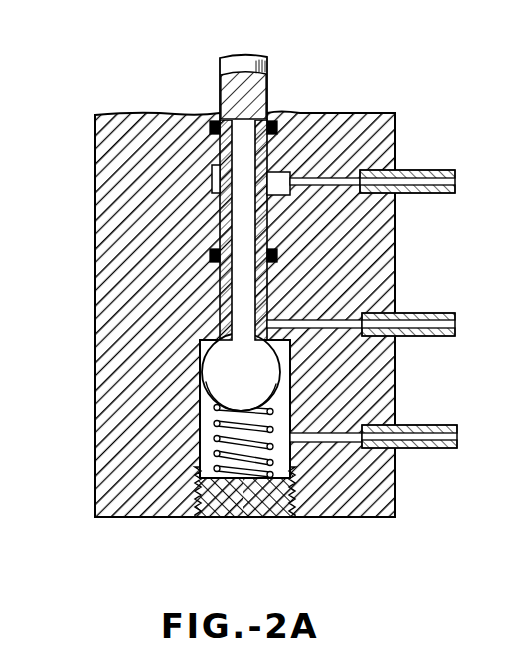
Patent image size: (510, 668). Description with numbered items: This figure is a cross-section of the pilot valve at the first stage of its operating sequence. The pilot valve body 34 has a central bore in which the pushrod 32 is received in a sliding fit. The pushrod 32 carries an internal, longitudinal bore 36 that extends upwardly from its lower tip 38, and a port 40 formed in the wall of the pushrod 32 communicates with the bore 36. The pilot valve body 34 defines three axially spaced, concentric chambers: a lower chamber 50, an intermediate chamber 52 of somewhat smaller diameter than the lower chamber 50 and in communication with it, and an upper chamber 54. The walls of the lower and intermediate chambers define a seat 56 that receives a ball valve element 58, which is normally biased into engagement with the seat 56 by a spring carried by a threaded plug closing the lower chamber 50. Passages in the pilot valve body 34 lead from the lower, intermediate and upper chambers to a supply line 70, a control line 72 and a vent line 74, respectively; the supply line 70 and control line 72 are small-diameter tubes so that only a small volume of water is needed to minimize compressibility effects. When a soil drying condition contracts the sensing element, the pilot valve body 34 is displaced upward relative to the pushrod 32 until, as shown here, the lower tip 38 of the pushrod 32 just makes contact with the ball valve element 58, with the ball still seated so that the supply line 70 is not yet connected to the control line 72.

The pushrod 32 is at (268, 96).
The pilot valve body 34 is at (130, 322).
The bore 36 is at (214, 180).
The lower tip 38 is at (230, 305).
The port 40 is at (272, 196).
The lower chamber 50 is at (205, 442).
The intermediate chamber 52 is at (268, 300).
The upper chamber 54 is at (300, 114).
The seat 56 is at (200, 341).
The ball valve element 58 is at (215, 372).
The supply line 70 is at (433, 426).
The control line 72 is at (430, 315).
The vent line 74 is at (418, 172).